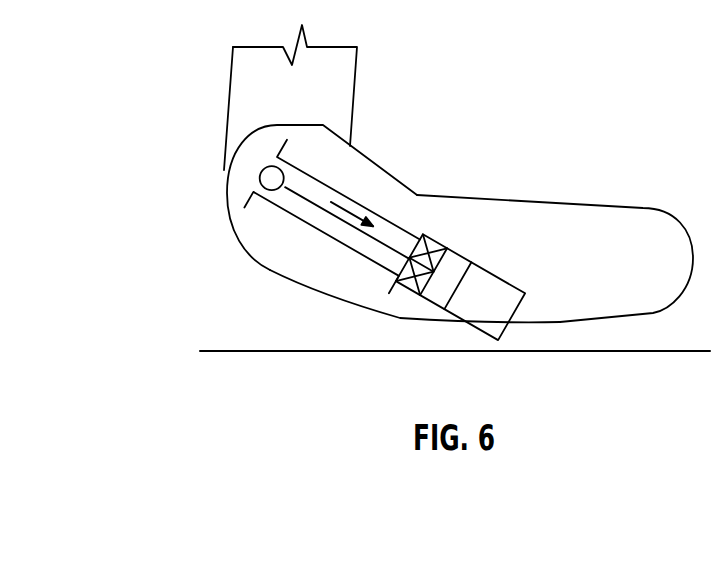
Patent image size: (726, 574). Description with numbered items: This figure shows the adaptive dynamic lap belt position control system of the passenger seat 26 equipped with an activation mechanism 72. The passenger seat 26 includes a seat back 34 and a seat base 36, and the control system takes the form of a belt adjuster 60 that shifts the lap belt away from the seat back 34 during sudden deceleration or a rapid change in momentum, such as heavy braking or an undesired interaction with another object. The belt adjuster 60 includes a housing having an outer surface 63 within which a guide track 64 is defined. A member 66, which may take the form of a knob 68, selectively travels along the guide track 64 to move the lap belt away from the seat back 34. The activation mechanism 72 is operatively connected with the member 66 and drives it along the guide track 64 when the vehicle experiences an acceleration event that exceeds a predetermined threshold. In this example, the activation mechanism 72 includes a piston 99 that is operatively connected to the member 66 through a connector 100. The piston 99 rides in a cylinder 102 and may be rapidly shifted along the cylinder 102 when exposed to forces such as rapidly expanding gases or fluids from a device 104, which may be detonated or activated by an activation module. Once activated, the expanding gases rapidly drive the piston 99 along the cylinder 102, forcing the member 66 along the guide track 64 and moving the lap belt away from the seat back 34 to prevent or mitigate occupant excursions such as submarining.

The passenger seat 26 is at (247, 89).
The seat back 34 is at (240, 95).
The seat base 36 is at (645, 300).
The belt adjuster 60 is at (419, 270).
The outer surface 63 is at (368, 300).
The guide track 64 is at (320, 231).
The member 66 is at (286, 169).
The knob 68 is at (260, 172).
The activation mechanism 72 is at (386, 220).
The piston 99 is at (440, 283).
The connector 100 is at (326, 233).
The cylinder 102 is at (483, 320).
The device 104 is at (442, 238).